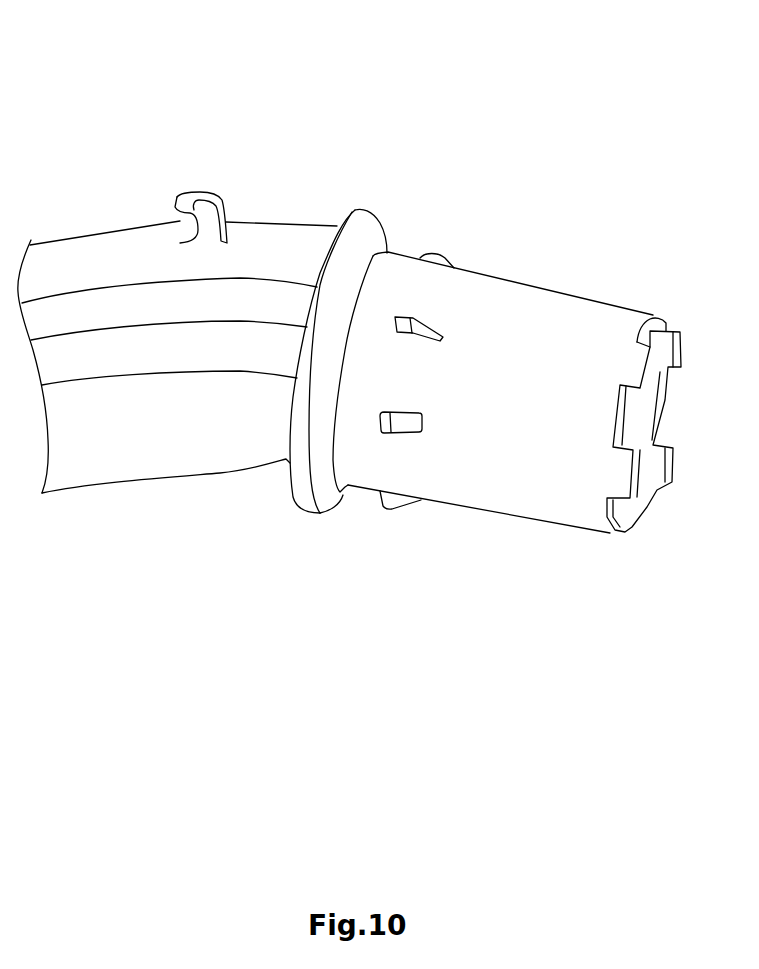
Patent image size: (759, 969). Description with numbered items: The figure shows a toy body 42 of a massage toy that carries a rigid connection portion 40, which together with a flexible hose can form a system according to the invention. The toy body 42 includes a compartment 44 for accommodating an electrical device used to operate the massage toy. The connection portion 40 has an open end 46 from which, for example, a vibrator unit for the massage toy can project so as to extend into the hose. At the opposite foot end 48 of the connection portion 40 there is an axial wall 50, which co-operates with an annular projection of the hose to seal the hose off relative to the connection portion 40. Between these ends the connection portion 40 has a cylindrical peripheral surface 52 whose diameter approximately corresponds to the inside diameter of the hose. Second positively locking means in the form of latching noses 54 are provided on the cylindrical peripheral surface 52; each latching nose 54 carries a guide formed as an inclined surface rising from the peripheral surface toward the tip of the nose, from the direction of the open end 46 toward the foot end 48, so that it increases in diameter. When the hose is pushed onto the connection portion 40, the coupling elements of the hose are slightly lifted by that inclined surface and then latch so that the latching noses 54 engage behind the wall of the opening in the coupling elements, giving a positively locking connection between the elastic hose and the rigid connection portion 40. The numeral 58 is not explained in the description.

The connection portion 40 is at (470, 243).
The toy body 42 is at (136, 201).
The compartment 44 is at (200, 356).
The open end 46 is at (700, 308).
The foot end 48 is at (344, 525).
The axial wall 50 is at (360, 185).
The cylindrical peripheral surface 52 is at (528, 475).
The latching nose 54 is at (416, 295).
The latch tab 58 is at (452, 328).